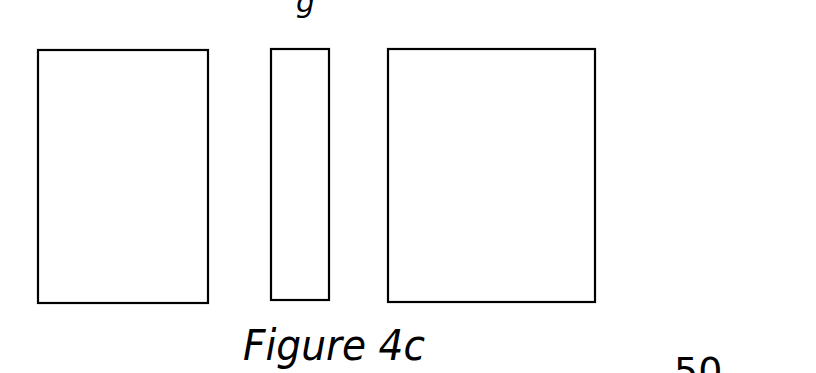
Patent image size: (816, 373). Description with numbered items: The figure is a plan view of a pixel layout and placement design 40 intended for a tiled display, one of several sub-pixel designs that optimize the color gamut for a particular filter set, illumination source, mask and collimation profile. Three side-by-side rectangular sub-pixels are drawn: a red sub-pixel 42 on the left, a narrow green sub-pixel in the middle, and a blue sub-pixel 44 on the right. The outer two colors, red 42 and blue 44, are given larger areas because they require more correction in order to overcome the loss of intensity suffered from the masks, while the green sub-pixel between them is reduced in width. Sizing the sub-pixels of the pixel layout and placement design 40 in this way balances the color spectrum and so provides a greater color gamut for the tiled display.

The pixel layout and placement design 40 is at (645, 101).
The red sub-pixel 42 is at (148, 109).
The blue sub-pixel 44 is at (517, 107).